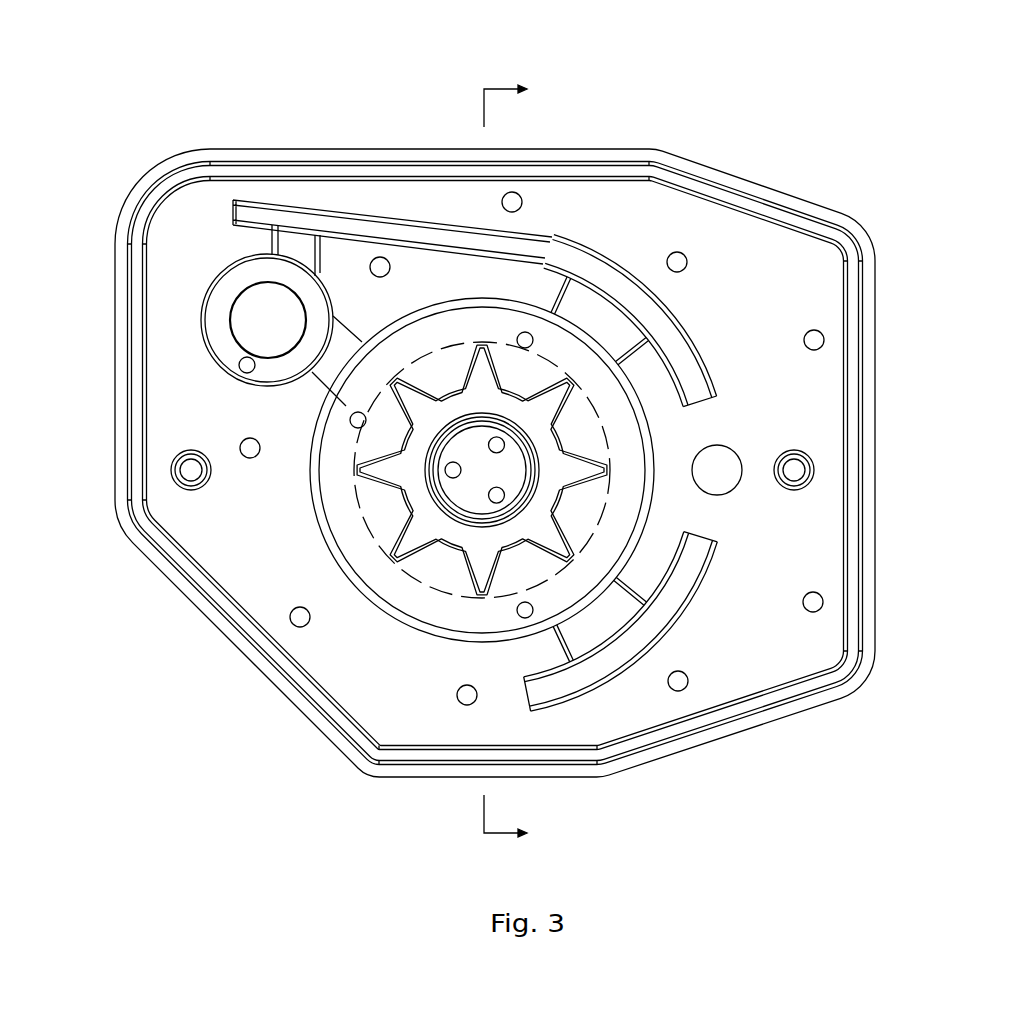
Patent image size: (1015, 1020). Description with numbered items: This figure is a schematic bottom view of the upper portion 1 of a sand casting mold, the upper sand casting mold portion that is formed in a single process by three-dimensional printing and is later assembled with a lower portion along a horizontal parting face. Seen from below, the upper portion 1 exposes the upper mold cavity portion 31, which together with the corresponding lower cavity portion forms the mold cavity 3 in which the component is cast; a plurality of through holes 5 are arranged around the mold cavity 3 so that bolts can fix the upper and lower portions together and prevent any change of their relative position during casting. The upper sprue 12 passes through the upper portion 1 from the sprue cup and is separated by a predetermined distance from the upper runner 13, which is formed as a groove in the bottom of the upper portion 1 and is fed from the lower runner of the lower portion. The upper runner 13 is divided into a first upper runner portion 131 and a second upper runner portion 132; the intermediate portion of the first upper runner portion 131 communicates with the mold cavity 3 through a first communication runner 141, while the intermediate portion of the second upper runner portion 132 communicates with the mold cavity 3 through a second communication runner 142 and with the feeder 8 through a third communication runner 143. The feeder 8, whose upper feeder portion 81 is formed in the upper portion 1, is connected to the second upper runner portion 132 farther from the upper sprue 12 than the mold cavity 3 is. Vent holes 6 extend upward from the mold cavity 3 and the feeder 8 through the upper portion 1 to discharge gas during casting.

The upper portion 1 is at (777, 127).
The mold cavity 3 is at (427, 512).
The upper mold cavity portion 31 is at (433, 568).
The through holes 5 is at (468, 695).
The vent holes 6 is at (491, 444).
The feeder 8 is at (216, 249).
The upper feeder portion 81 is at (258, 332).
The upper sprue 12 is at (716, 469).
The upper runner 13 is at (766, 473).
The first upper runner portion 131 is at (697, 563).
The second upper runner portion 132 is at (715, 385).
The first communication runner 141 is at (593, 625).
The second communication runner 142 is at (590, 318).
The third communication runner 143 is at (300, 247).